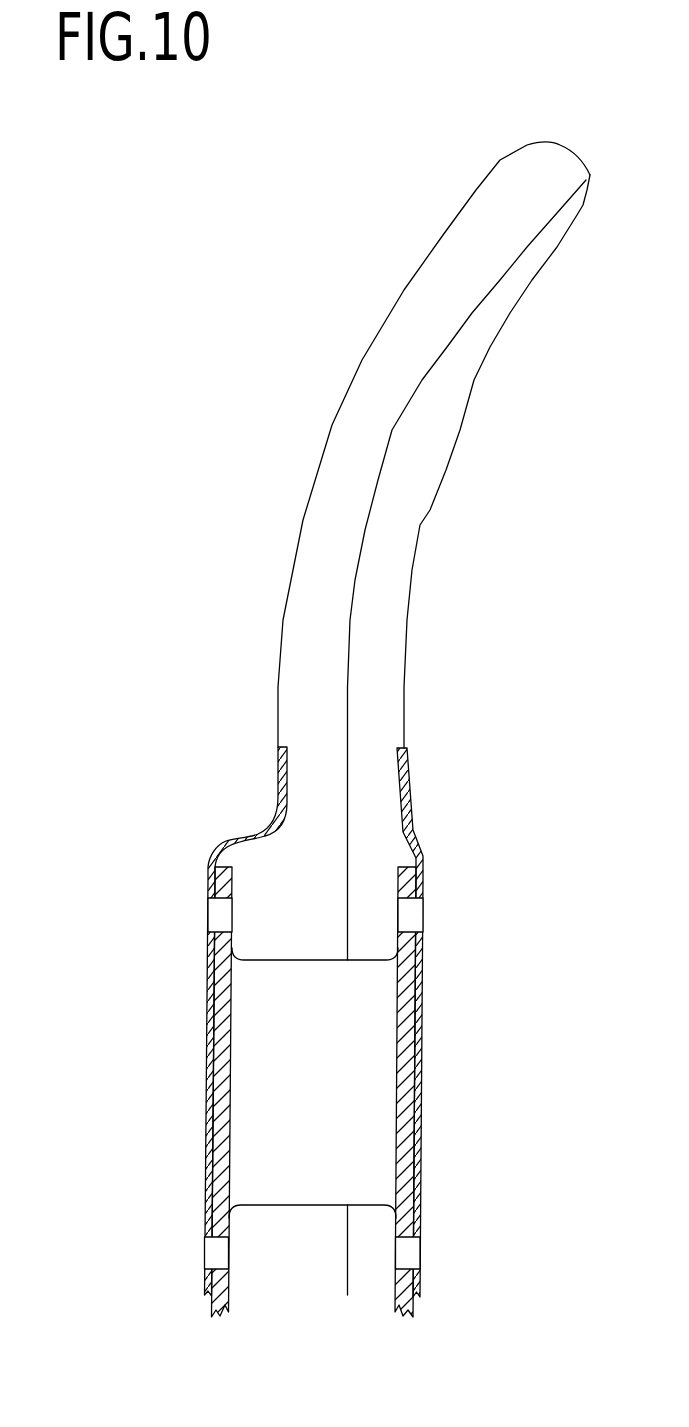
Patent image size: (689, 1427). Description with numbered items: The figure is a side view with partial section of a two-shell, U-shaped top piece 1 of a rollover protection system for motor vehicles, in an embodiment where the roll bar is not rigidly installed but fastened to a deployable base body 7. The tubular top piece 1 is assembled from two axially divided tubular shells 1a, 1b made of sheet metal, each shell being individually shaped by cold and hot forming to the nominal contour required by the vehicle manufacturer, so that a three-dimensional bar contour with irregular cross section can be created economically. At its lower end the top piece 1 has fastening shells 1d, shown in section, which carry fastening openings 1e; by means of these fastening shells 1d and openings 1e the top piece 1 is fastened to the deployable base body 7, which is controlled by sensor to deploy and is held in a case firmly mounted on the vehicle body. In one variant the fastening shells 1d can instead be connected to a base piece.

The top piece 1 is at (341, 719).
The tubular shell 1a is at (467, 343).
The tubular shell 1b is at (347, 442).
The fastening shell 1d is at (205, 1067).
The fastening opening 1e is at (208, 915).
The deployable base body 7 is at (405, 997).